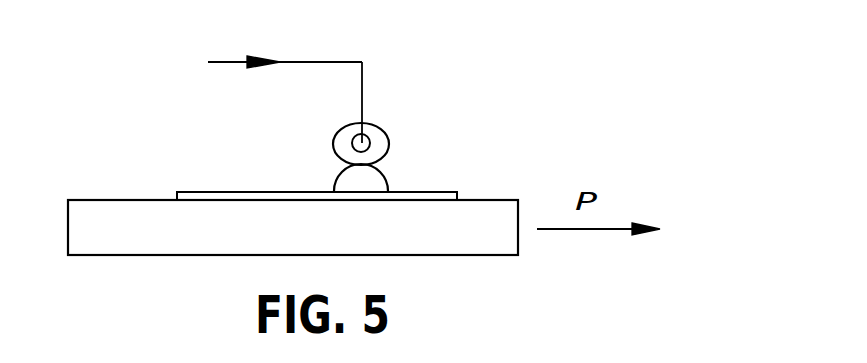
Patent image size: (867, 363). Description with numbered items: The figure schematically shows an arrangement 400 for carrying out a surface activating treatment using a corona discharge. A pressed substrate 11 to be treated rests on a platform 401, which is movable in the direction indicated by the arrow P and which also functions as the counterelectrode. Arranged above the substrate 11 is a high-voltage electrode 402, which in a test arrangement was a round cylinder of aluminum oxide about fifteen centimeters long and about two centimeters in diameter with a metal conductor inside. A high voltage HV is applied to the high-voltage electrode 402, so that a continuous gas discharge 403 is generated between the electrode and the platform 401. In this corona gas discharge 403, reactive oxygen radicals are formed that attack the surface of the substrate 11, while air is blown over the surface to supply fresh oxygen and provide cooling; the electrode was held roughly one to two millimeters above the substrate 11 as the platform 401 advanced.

The arrangement for carrying out a surface activating treatment using a corona 400 is at (514, 86).
The platform 401 is at (85, 209).
The high-voltage electrode 402 is at (387, 134).
The gas discharge 403 is at (386, 179).
The substrate 11 is at (191, 193).